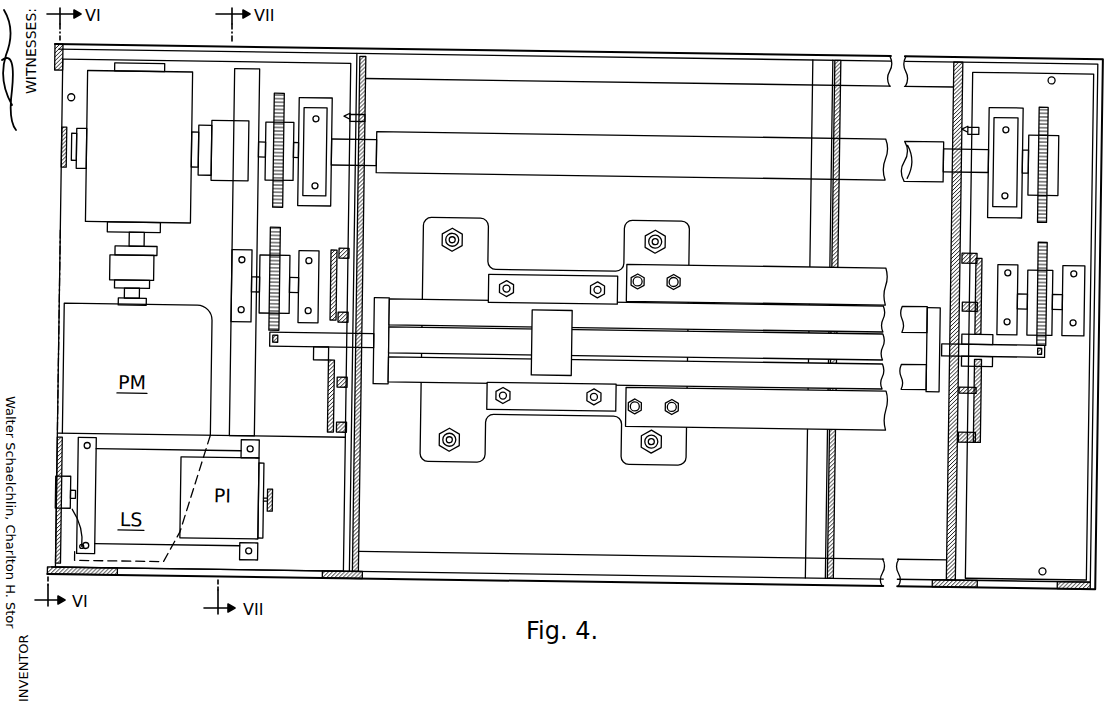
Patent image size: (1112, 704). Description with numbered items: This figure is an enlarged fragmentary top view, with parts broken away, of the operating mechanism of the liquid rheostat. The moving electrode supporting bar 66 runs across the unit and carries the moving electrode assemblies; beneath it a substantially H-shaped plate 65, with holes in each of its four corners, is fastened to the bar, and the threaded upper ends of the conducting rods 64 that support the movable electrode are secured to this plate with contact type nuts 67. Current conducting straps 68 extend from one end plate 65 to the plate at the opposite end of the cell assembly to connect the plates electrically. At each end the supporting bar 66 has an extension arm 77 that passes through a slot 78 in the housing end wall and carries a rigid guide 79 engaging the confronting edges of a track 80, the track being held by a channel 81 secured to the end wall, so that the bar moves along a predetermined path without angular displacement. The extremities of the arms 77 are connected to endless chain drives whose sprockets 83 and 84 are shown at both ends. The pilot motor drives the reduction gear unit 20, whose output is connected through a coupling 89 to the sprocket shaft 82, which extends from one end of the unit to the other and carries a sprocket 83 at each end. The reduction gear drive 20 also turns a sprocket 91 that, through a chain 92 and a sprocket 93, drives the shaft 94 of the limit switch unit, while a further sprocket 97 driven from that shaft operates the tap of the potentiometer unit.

The reduction gear unit 20 is at (131, 170).
The conducting rods 64 is at (458, 243).
The plate 65 is at (428, 395).
The moving electrode supporting bar 66 is at (416, 301).
The contact type nuts 67 is at (461, 223).
The current conducting straps 68 is at (731, 259).
The extension arms 77 is at (313, 344).
The slots 78 is at (377, 291).
The guides 79 is at (324, 357).
The tracks 80 is at (336, 248).
The channels 81 is at (353, 246).
The sprocket shaft 82 is at (458, 127).
The sprocket 83 is at (283, 93).
The sprocket 84 is at (287, 237).
The coupling 89 is at (227, 119).
The sprocket 91 is at (62, 148).
The chain 92 is at (65, 240).
The sprocket 93 is at (66, 436).
The limit switch shaft 94 is at (80, 493).
The sprocket 97 is at (280, 497).